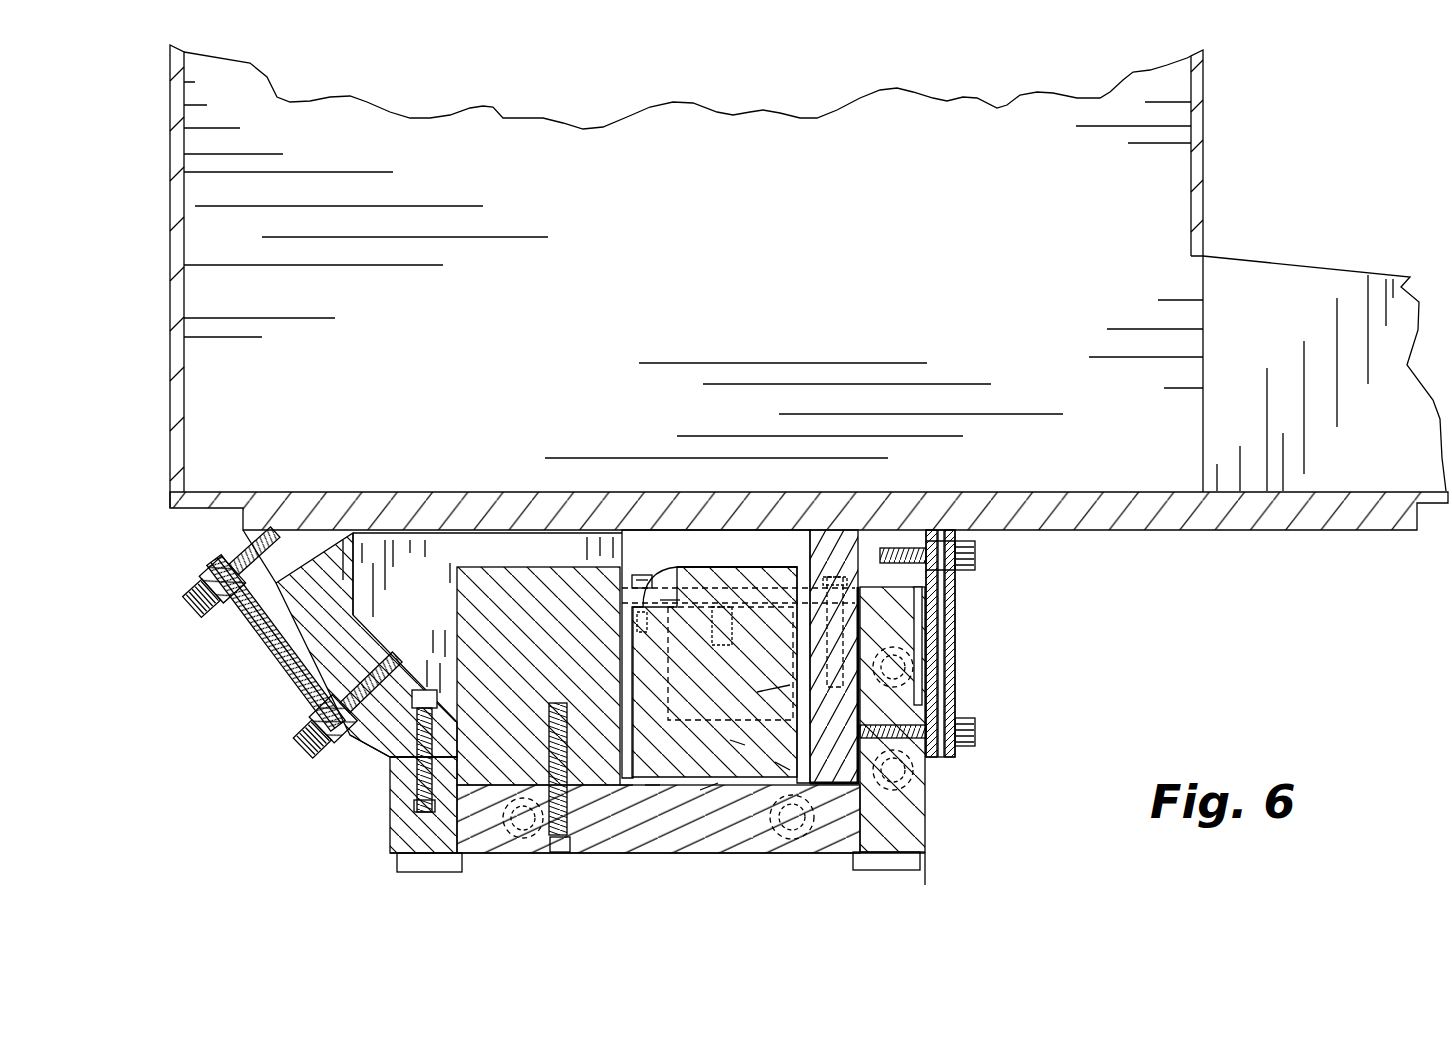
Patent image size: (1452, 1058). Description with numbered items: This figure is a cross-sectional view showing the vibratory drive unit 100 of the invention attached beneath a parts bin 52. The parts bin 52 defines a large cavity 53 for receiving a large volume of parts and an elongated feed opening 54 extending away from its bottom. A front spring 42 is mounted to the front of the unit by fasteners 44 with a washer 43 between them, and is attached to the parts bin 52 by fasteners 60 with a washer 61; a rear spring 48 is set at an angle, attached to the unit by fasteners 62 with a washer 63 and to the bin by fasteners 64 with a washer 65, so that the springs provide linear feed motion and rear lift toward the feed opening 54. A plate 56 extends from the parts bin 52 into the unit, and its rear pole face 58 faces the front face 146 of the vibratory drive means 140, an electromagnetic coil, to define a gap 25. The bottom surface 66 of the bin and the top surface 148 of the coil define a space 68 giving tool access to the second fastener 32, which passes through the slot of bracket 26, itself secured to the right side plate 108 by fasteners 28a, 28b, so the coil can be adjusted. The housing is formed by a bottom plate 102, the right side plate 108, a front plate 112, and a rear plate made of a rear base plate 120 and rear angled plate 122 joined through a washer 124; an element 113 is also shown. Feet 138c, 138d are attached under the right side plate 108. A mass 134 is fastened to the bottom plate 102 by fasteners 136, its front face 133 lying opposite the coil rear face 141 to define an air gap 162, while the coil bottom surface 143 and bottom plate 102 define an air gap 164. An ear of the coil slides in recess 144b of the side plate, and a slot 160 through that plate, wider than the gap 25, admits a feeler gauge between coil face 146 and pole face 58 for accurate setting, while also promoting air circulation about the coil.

The gap 25 is at (925, 880).
The bracket 26 is at (807, 587).
The fastener 28a is at (650, 578).
The fastener 28b is at (835, 577).
The second fastener 32 is at (753, 567).
The spring 42 is at (947, 653).
The washer 43 is at (955, 712).
The fastener 44 is at (975, 735).
The spring 48 is at (263, 633).
The parts bin 52 is at (1203, 125).
The cavity 53 is at (827, 279).
The feed opening 54 is at (1300, 268).
The plate 56 is at (893, 645).
The pole face 58 is at (776, 763).
The fastener 60 is at (977, 550).
The washer 61 is at (957, 582).
The fastener 62 is at (312, 745).
The washer 63 is at (307, 700).
The fastener 64 is at (200, 607).
The washer 65 is at (228, 605).
The bottom surface 66 is at (723, 532).
The space 68 is at (715, 563).
The vibratory drive unit 100 is at (1050, 664).
The bottom plate 102 is at (602, 853).
The right side plate 108 is at (400, 585).
The front plate 112 is at (925, 787).
The gap 113 is at (918, 617).
The rear base plate 120 is at (400, 823).
The rear angled plate 122 is at (377, 747).
The washer 124 is at (387, 763).
The front face of mass 133 is at (583, 845).
The mass 134 is at (497, 740).
The fastener 136 is at (547, 853).
The foot 138c is at (395, 865).
The foot 138d is at (902, 873).
The vibratory drive means 140 is at (737, 745).
The rear face 141 is at (657, 770).
The bottom surface 143 is at (668, 758).
The recess 144b is at (630, 660).
The front face 146 is at (792, 838).
The top surface 148 is at (670, 603).
The slot 160 is at (756, 690).
The air gap 162 is at (623, 787).
The air gap 164 is at (710, 783).